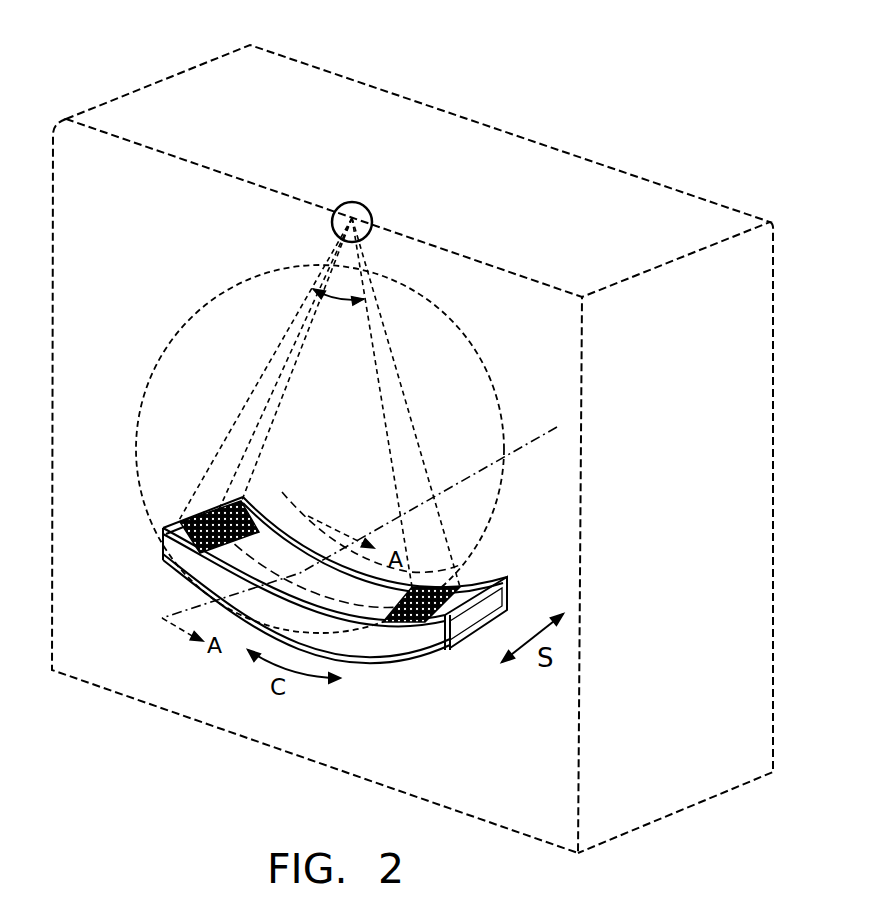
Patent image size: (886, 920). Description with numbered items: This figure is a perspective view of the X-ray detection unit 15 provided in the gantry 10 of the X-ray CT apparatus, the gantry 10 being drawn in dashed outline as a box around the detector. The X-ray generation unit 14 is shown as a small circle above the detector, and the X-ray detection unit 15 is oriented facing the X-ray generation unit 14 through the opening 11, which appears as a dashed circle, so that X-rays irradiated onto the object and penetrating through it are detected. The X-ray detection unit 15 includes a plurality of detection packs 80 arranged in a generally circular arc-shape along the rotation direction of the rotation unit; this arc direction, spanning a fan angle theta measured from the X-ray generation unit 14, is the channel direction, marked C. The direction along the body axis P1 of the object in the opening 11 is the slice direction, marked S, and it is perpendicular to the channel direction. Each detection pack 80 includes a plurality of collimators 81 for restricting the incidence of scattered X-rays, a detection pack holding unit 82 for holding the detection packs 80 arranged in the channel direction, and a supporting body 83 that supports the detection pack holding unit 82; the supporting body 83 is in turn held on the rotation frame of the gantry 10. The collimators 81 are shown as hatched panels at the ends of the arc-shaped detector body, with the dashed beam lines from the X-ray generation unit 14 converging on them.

The gantry 10 is at (316, 67).
The opening 11 is at (230, 335).
The X-ray generation unit 14 is at (369, 212).
The X-ray detection unit 15 is at (188, 500).
The detection pack 80 is at (387, 660).
The collimator 81 is at (177, 527).
The detection pack holding unit 82 is at (407, 660).
The supporting body 83 is at (183, 580).
The body axis P1 is at (528, 443).